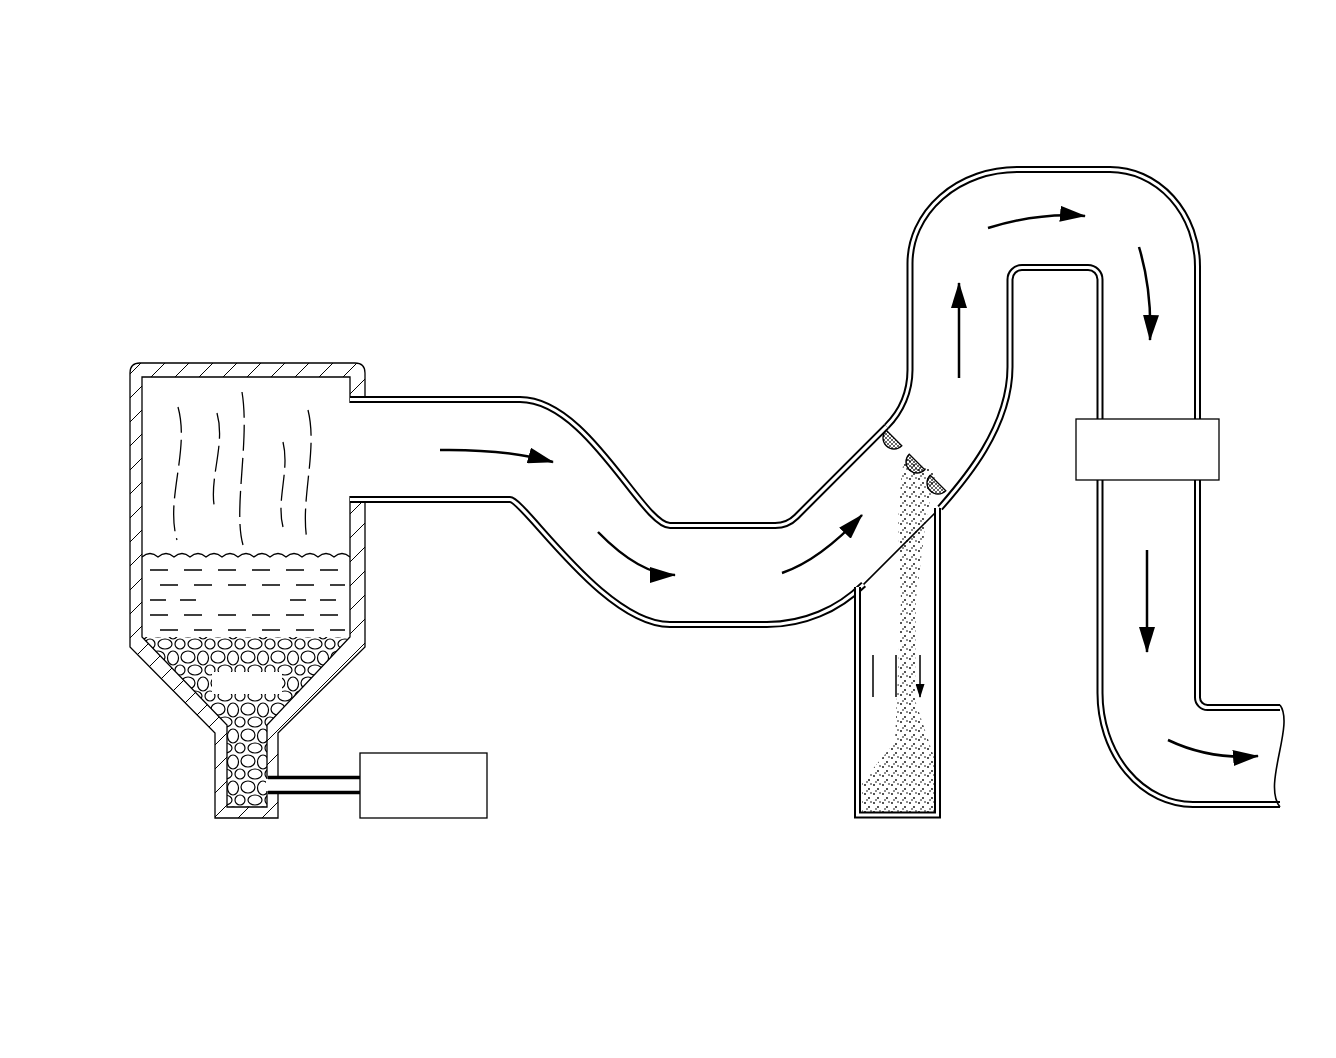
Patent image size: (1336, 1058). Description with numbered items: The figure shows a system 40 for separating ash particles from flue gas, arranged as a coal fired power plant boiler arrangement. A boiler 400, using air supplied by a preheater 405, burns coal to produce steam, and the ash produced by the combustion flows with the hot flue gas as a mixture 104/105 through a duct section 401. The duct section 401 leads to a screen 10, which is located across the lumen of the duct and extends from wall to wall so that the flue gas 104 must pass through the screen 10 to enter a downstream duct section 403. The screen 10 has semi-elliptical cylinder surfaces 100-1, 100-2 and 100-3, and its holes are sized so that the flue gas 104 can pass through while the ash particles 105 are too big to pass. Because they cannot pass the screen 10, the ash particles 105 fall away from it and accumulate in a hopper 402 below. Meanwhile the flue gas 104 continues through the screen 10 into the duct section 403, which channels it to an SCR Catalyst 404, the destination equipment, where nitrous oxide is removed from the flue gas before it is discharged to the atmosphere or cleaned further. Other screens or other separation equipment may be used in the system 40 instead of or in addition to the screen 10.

The system 40 is at (511, 245).
The boiler 400 is at (240, 363).
The duct section 401 is at (433, 397).
The flue gas 104 is at (1032, 215).
The ash particles 105 is at (905, 775).
The screen 10 is at (926, 441).
The semi-elliptical cylinder surface 100-1 is at (892, 428).
The semi-elliptical cylinder surface 100-2 is at (922, 457).
The semi-elliptical cylinder surface 100-3 is at (950, 477).
The hopper 402 is at (940, 795).
The duct section 403 is at (906, 277).
The SCR Catalyst 404 is at (1220, 448).
The preheater 405 is at (427, 818).